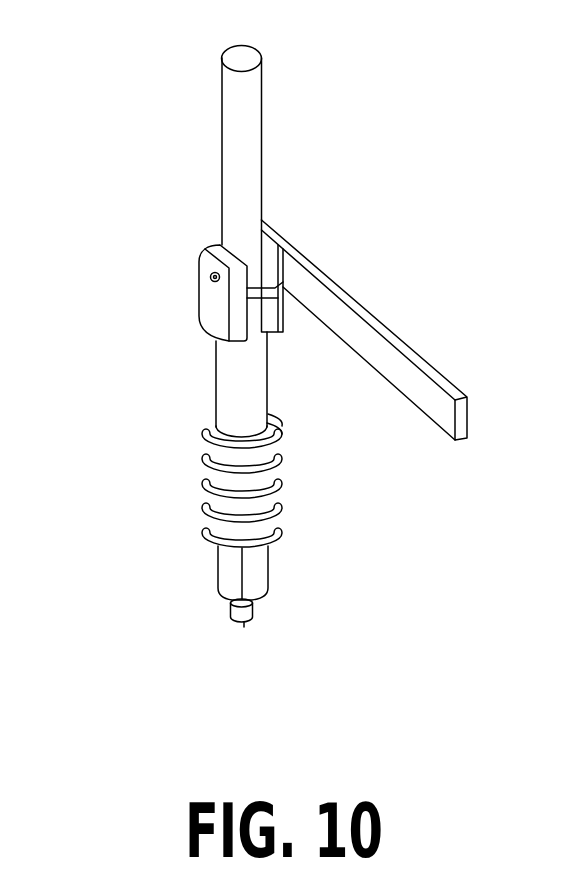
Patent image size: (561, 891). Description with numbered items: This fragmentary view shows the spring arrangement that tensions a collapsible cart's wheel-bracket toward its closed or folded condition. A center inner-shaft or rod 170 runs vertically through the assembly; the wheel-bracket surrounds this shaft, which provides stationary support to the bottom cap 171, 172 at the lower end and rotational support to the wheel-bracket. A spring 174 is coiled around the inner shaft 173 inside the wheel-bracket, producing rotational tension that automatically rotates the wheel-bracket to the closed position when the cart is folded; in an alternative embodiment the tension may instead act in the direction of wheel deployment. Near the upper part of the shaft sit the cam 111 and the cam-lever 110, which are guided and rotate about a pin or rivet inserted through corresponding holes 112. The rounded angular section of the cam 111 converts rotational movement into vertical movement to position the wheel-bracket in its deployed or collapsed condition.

The cam-lever 110 is at (380, 360).
The cam 111 is at (220, 307).
The holes 112 is at (213, 278).
The inner-shaft 170 is at (248, 110).
The bottom cap 171 is at (232, 572).
The bottom cap 172 is at (245, 623).
The inner shaft 173 is at (230, 373).
The spring 174 is at (280, 495).